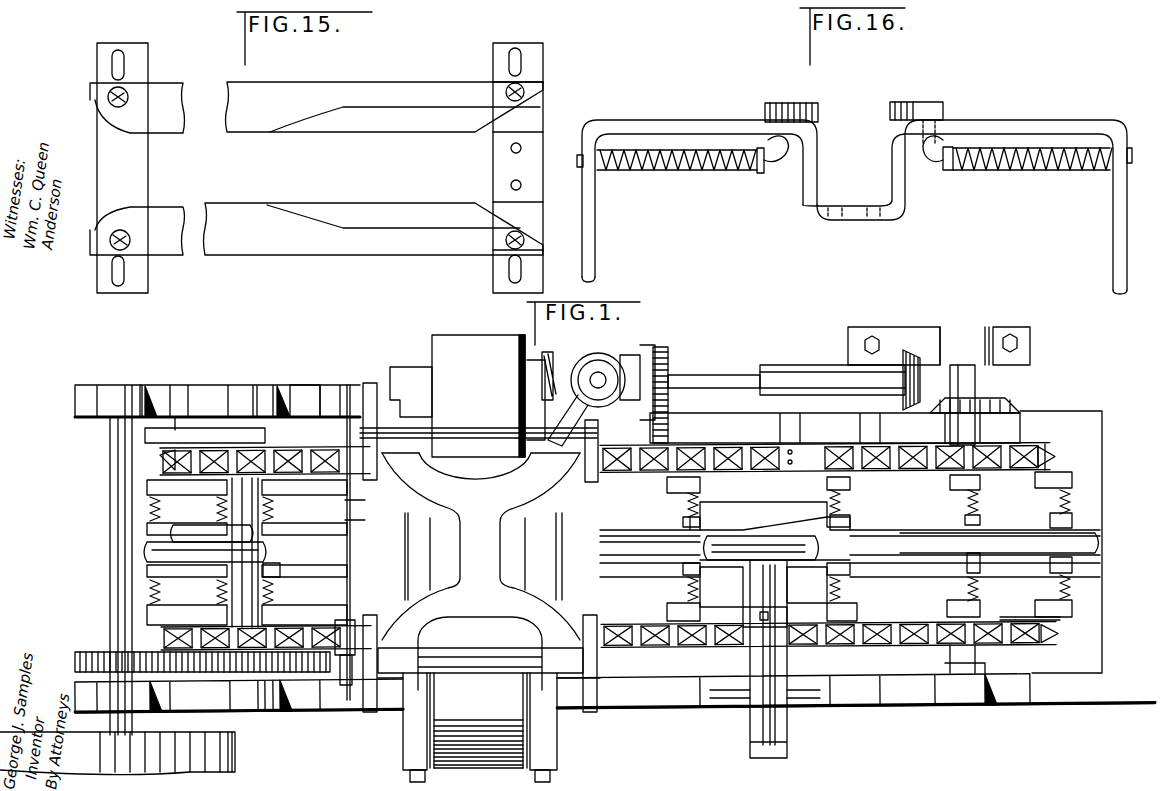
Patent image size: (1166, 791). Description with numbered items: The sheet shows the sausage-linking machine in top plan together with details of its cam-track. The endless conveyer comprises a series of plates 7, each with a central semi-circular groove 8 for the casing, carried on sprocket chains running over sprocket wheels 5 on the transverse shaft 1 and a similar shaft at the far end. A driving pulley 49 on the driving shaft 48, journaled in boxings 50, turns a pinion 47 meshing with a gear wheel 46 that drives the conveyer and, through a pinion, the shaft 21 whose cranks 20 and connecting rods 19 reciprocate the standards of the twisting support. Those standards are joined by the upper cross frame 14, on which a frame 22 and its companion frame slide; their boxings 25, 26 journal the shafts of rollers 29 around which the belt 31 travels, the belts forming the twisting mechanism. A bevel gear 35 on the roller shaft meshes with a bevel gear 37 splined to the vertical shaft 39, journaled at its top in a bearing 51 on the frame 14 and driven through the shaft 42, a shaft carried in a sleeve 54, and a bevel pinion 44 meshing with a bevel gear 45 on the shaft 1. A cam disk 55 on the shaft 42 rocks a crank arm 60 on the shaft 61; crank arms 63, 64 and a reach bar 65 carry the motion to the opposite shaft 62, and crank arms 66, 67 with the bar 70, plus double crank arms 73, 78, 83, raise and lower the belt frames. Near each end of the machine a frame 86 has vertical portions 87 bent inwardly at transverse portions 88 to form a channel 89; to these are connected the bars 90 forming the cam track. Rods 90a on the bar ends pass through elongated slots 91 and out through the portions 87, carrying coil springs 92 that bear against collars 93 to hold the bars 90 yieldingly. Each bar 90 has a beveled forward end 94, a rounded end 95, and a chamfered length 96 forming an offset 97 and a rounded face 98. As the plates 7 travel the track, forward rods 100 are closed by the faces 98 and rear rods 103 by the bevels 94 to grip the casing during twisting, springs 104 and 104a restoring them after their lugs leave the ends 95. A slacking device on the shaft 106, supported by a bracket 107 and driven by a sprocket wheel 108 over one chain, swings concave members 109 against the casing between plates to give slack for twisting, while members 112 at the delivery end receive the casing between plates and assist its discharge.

In FIG. 1, the transverse shaft 1 is at (252, 497).
In FIG. 1, the sprocket wheels 5 is at (1046, 446).
In FIG. 1, the plates or rests 7 is at (609, 548).
In FIG. 1, the grooves or channels 8 is at (382, 565).
In FIG. 1, the upper cross frame or brace 14 is at (481, 546).
In FIG. 1, the connecting rods 19 is at (175, 417).
In FIG. 1, the cranks 20 is at (150, 436).
In FIG. 1, the shaft 21 is at (156, 457).
In FIG. 1, the frame 22 is at (420, 568).
In FIG. 1, the boxings 25 is at (400, 378).
In FIG. 1, the boxings 26 is at (410, 755).
In FIG. 1, the rollers or pulleys 29 is at (432, 348).
In FIG. 1, the belt 31 is at (478, 396).
In FIG. 1, the bevel gear 35 is at (572, 360).
In FIG. 1, the bevel gear 37 is at (613, 368).
In FIG. 1, the vertically disposed shaft 39 is at (598, 372).
In FIG. 1, the shaft 42 is at (745, 379).
In FIG. 1, the bevel pinion 44 is at (915, 340).
In FIG. 1, the bevel gear 45 is at (1006, 408).
In FIG. 1, the gear wheel 46 is at (292, 707).
In FIG. 1, the pinion 47 is at (100, 655).
In FIG. 1, the driving shaft 48 is at (118, 543).
In FIG. 1, the driving pulley 49 is at (222, 758).
In FIG. 1, the boxings 50 is at (110, 702).
In FIG. 1, the bearing 51 is at (568, 420).
In FIG. 1, the sleeve 54 is at (797, 360).
In FIG. 1, the cam shaped disk 55 is at (662, 363).
In FIG. 1, the crank arm 60 is at (655, 428).
In FIG. 1, the shaft 61 is at (490, 417).
In FIG. 1, the shaft 62 is at (490, 650).
In FIG. 1, the crank arm 63 is at (345, 420).
In FIG. 1, the crank arm 64 is at (346, 690).
In FIG. 1, the reach bar or lever 65 is at (362, 516).
In FIG. 1, the crank arm 66 is at (588, 450).
In FIG. 1, the crank arm 67 is at (533, 442).
In FIG. 1, the bar 70 is at (528, 382).
In FIG. 1, the double crank arm 73 is at (402, 468).
In FIG. 1, the double crank arm 78 is at (368, 690).
In FIG. 1, the double crank arm 83 is at (590, 677).
In FIG. 15, the frames 86 is at (348, 168).
In FIG. 16, the frames 86 is at (1037, 178).
In FIG. 1, the frames 86 is at (870, 690).
In FIG. 16, the vertical portions 87 is at (588, 243).
In FIG. 16, the transverse portions 88 is at (693, 105).
In FIG. 16, the channel 89 is at (965, 205).
In FIG. 15, the bars 90 is at (374, 168).
In FIG. 16, the bars 90 is at (857, 117).
In FIG. 1, the bars 90 is at (750, 494).
In FIG. 16, the rods 90a is at (923, 143).
In FIG. 15, the elongated slots 91 is at (517, 62).
In FIG. 16, the coil springs 92 is at (663, 168).
In FIG. 16, the collars 93 is at (760, 170).
In FIG. 15, the beveled forward ends 94 is at (510, 116).
In FIG. 15, the rounded ends 95 is at (97, 220).
In FIG. 15, the chamfered portion 96 is at (391, 122).
In FIG. 1, the chamfered portion 96 is at (818, 572).
In FIG. 15, the off sets 97 is at (418, 223).
In FIG. 15, the beveled or rounded faces 98 is at (318, 130).
In FIG. 1, the beveled or rounded faces 98 is at (785, 517).
In FIG. 1, the bars or rods 100 is at (853, 518).
In FIG. 1, the bars or rods 103 is at (690, 540).
In FIG. 1, the springs 104 is at (835, 592).
In FIG. 1, the springs 104a is at (976, 505).
In FIG. 1, the shaft 106 is at (758, 760).
In FIG. 1, the standard or bracket 107 is at (820, 698).
In FIG. 1, the sprocket wheel 108 is at (730, 636).
In FIG. 1, the members 109 is at (818, 549).
In FIG. 1, the members 112 is at (205, 507).